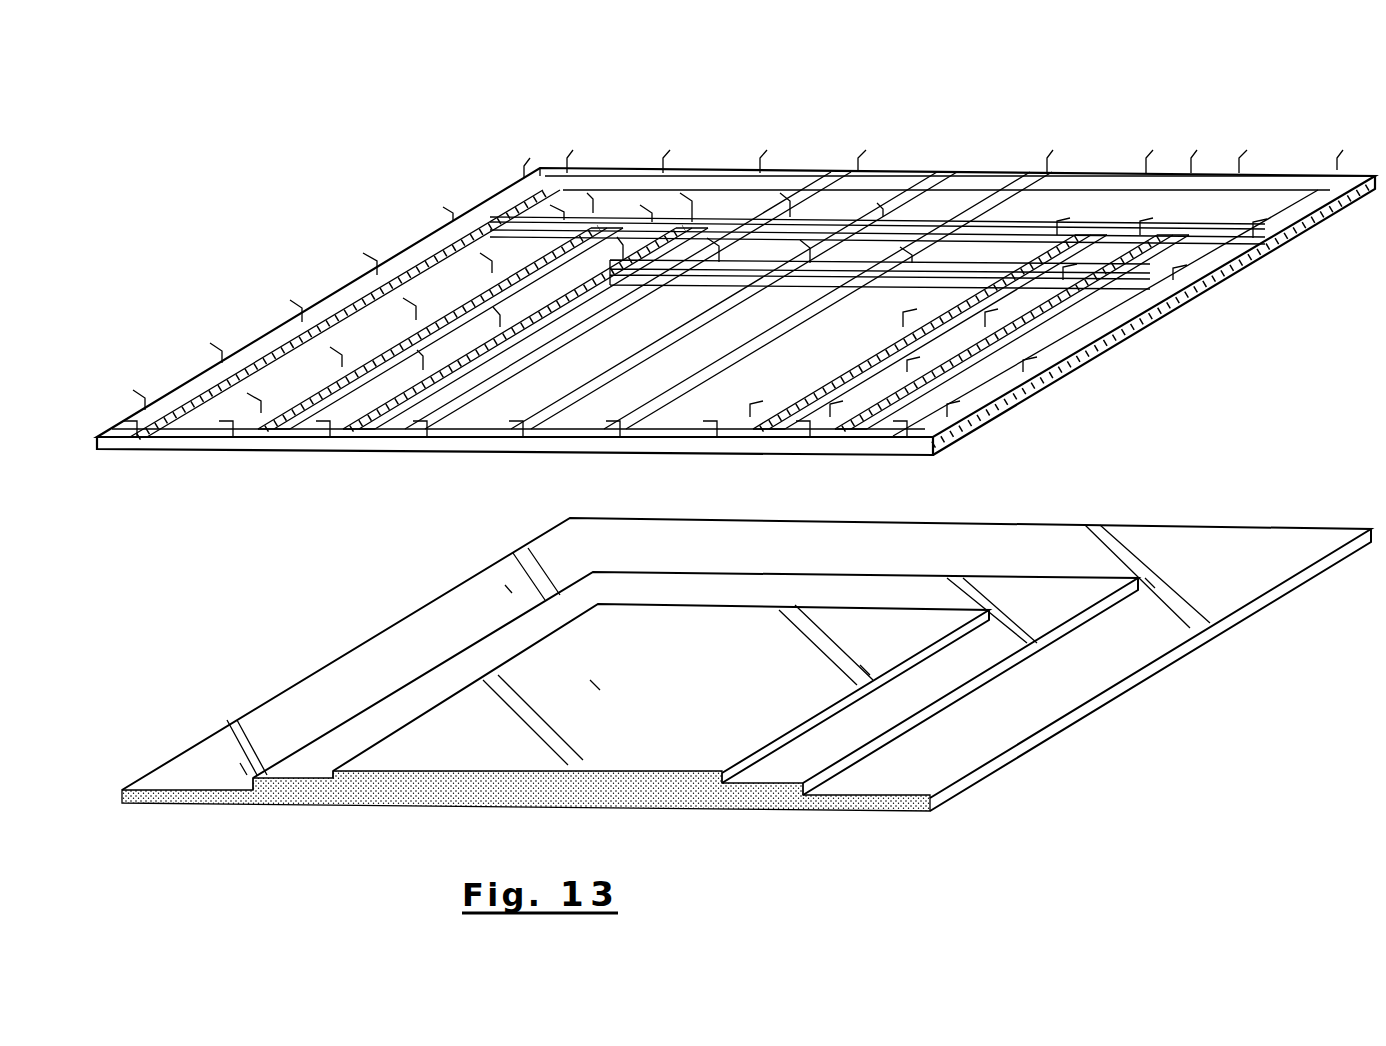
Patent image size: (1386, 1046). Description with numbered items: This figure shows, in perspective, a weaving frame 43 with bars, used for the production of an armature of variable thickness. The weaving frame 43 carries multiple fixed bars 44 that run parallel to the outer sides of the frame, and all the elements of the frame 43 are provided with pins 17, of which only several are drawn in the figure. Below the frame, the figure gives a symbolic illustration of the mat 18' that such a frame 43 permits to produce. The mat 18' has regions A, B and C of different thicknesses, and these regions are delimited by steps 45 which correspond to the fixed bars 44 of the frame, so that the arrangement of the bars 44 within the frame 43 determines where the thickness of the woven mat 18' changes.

The pins 17 is at (455, 260).
The weaving frame 43 is at (1262, 288).
The fixed bars 44 is at (905, 283).
The mat 18' is at (746, 617).
The steps 45 is at (1018, 576).